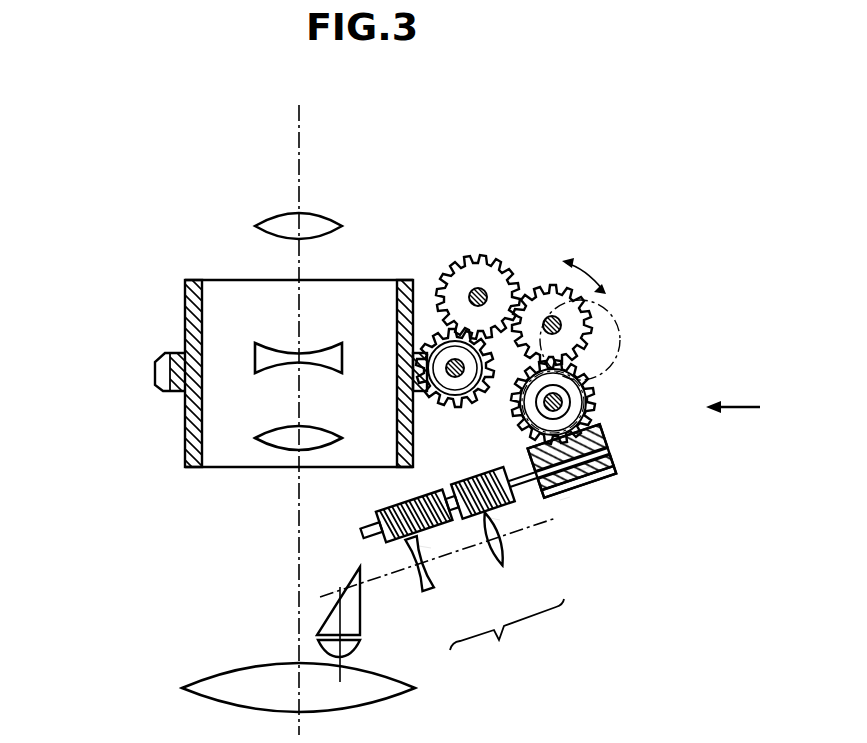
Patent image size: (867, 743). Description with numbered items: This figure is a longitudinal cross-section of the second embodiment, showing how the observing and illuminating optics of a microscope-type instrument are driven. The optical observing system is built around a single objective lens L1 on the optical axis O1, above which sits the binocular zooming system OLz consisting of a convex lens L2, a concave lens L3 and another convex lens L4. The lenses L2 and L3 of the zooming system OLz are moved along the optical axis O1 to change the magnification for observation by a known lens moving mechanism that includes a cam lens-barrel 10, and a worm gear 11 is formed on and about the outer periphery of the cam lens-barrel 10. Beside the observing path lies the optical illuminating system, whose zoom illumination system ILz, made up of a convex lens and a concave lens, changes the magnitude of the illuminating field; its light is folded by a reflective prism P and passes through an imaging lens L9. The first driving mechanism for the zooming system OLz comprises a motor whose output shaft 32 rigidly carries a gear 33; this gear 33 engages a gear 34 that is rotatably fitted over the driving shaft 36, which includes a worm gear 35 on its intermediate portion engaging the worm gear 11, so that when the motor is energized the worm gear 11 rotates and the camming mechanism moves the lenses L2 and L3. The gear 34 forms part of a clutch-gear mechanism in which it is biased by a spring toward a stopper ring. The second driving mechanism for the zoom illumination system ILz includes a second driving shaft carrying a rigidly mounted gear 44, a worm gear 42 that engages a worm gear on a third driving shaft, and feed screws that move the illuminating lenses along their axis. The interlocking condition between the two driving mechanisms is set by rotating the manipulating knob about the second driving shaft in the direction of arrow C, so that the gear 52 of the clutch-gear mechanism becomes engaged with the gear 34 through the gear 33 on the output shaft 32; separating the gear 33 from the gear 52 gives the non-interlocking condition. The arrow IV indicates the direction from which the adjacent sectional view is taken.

The cam lens-barrel 10 is at (186, 281).
The worm gear 11 is at (157, 362).
The binocular zooming system OLz is at (182, 360).
The convex lens L4 is at (258, 228).
The concave lens L3 is at (255, 360).
The convex lens L2 is at (257, 447).
The objective lens L1 is at (200, 686).
The optical axis O1 is at (297, 548).
The reflective prism P is at (347, 584).
The imaging lens L9 is at (360, 646).
The zoom illumination system ILz is at (507, 640).
The worm gear 35 is at (451, 408).
The driving shaft 36 is at (442, 374).
The gear 34 is at (440, 337).
The gear 33 is at (489, 270).
The output shaft 32 is at (487, 295).
The arrow C is at (596, 274).
The gear 52 is at (623, 352).
The gear 44 is at (600, 381).
The worm gear 42 is at (590, 401).
The view direction arrow IV is at (751, 408).